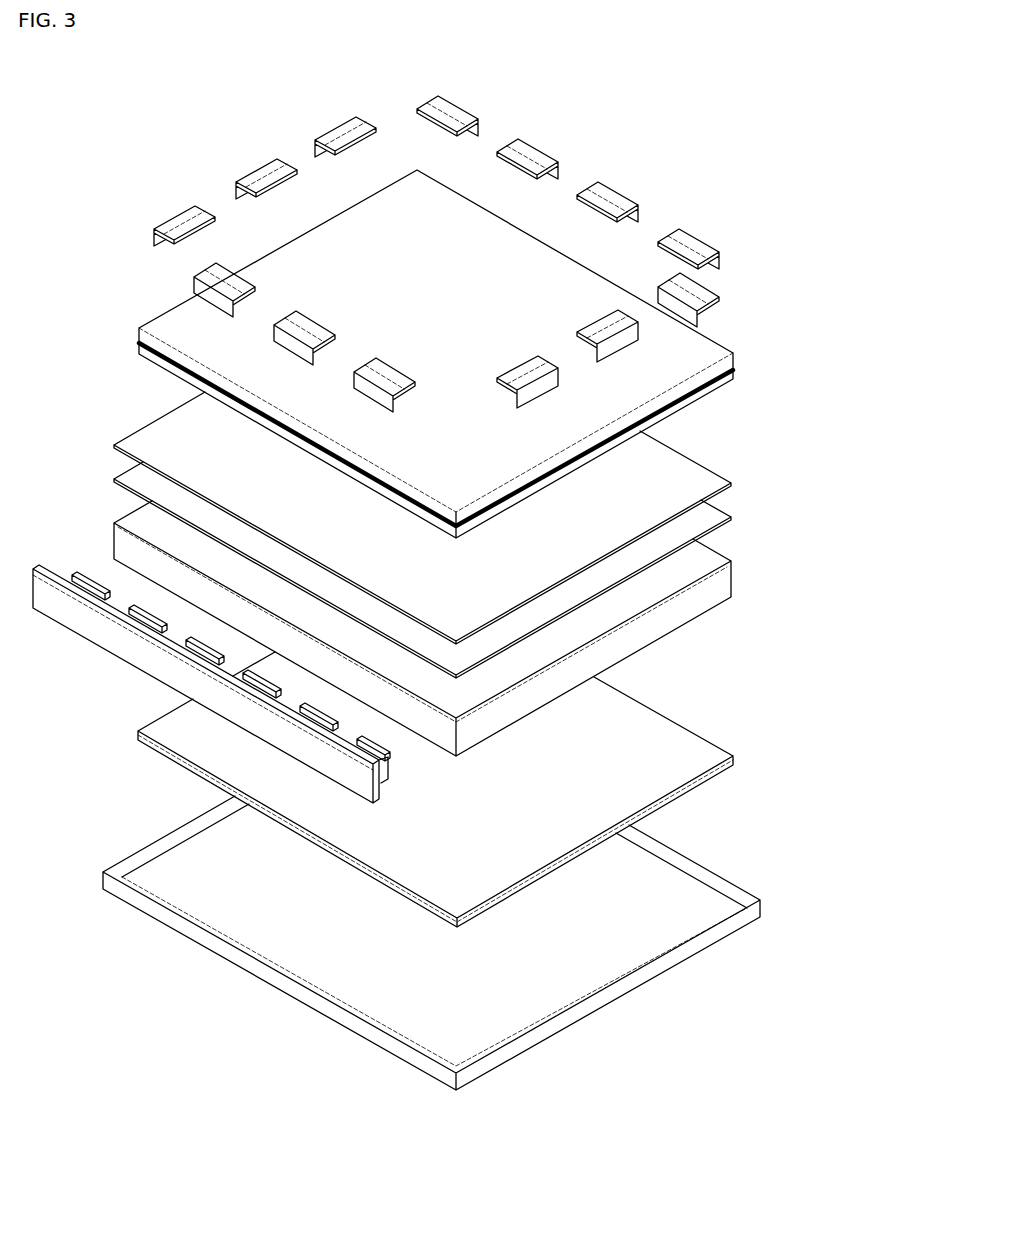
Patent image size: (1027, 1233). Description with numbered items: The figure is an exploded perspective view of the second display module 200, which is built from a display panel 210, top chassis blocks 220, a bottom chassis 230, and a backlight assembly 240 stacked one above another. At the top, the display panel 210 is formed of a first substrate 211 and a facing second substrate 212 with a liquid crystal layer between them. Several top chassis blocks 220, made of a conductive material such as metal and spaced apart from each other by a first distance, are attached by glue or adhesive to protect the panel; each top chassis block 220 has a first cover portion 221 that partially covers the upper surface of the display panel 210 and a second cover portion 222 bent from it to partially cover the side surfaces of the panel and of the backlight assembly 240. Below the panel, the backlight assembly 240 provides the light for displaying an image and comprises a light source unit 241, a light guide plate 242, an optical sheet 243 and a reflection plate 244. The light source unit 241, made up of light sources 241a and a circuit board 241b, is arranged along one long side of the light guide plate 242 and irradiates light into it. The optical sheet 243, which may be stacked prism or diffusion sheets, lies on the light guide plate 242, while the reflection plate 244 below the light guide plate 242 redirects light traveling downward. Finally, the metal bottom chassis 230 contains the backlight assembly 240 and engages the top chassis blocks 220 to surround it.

The second display module 200 is at (291, 90).
The display panel 210 is at (801, 359).
The first substrate 211 is at (707, 343).
The second substrate 212 is at (731, 372).
The top chassis block 220 is at (782, 205).
The first cover portion 221 is at (690, 277).
The second cover portion 222 is at (713, 287).
The bottom chassis 230 is at (686, 888).
The backlight assembly 240 is at (795, 484).
The light source unit 241 is at (747, 688).
The light sources 241a is at (385, 752).
The circuit board 241b is at (337, 738).
The light guide plate 242 is at (719, 583).
The optical sheet 243 is at (714, 468).
The reflection plate 244 is at (692, 741).